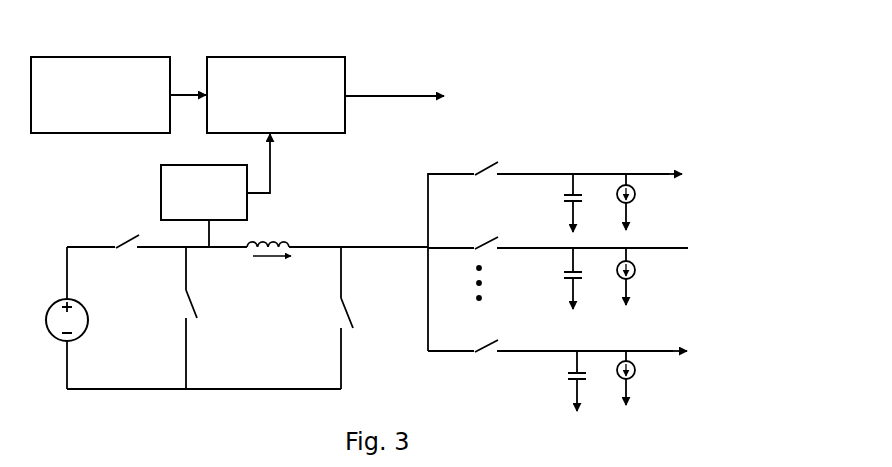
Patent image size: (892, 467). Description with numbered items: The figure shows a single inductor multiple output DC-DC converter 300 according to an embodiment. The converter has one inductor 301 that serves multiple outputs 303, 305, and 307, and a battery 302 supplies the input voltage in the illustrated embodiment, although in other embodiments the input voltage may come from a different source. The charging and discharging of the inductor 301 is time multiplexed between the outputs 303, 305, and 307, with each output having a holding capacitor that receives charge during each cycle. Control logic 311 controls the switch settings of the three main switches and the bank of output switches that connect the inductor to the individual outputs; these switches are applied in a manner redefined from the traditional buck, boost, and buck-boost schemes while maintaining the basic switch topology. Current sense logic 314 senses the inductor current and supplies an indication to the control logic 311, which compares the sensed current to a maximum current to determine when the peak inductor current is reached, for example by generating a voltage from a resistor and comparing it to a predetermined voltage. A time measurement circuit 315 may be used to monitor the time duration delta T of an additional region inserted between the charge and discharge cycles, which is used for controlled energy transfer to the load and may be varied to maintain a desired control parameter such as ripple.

The DC-DC converter 300 is at (522, 108).
The inductor 301 is at (286, 240).
The battery 302 is at (56, 302).
The output 303 is at (707, 163).
The output 305 is at (708, 238).
The output 307 is at (708, 333).
The control logic 311 is at (257, 57).
The current sense logic 314 is at (161, 188).
The time measurement circuit 315 is at (110, 57).